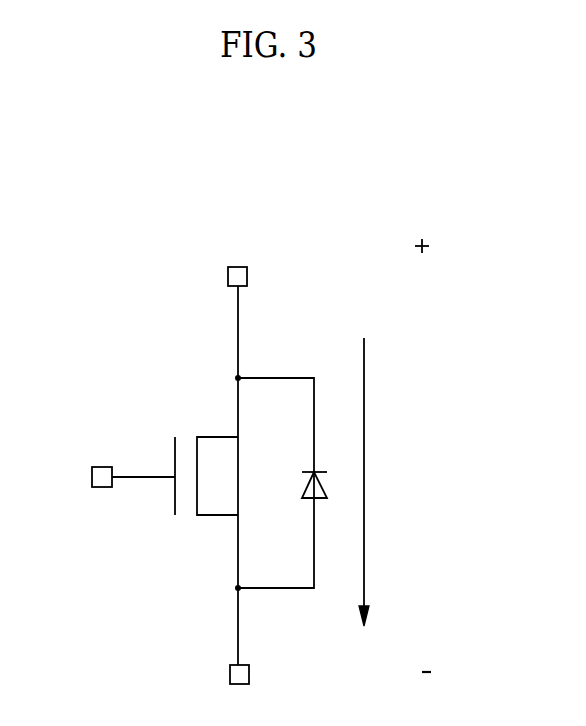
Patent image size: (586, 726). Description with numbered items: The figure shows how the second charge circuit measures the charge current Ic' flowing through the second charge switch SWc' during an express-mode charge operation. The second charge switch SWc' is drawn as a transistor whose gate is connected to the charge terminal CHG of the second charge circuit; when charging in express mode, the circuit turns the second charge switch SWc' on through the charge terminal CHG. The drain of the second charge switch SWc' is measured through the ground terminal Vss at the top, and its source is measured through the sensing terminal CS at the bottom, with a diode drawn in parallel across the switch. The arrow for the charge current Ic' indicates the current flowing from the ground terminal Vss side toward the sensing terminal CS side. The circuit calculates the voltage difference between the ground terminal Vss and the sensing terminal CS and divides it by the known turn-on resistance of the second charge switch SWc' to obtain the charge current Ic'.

The ground terminal Vss is at (233, 258).
The sensing terminal CS is at (241, 693).
The charge terminal CHG is at (104, 478).
The second charge switch SWc' is at (190, 500).
The charge current Ic' is at (377, 482).